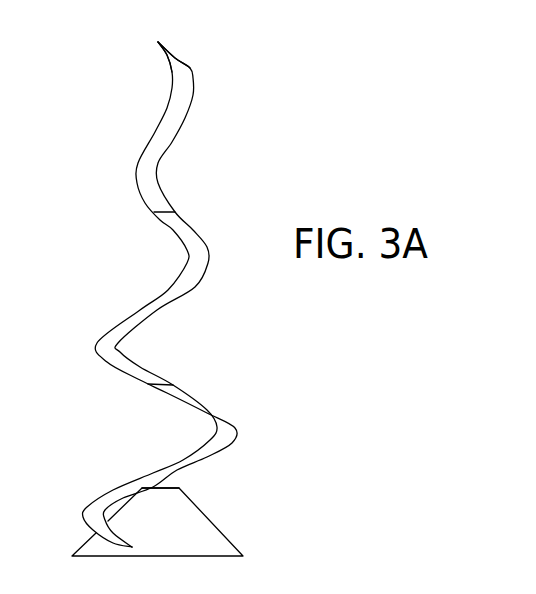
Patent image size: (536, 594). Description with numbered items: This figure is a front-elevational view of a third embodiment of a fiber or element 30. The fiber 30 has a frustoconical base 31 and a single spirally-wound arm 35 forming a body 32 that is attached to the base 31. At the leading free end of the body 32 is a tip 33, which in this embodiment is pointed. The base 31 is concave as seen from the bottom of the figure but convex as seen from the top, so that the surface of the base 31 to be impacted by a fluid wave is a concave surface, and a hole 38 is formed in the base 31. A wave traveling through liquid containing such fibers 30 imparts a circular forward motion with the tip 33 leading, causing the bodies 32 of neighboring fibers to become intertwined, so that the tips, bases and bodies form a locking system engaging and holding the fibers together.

The fiber 30 is at (245, 137).
The frustoconical base 31 is at (193, 525).
The body 32 is at (167, 302).
The tip 33 is at (178, 58).
The spirally-wound arm 35 is at (148, 183).
The hole 38 is at (165, 483).